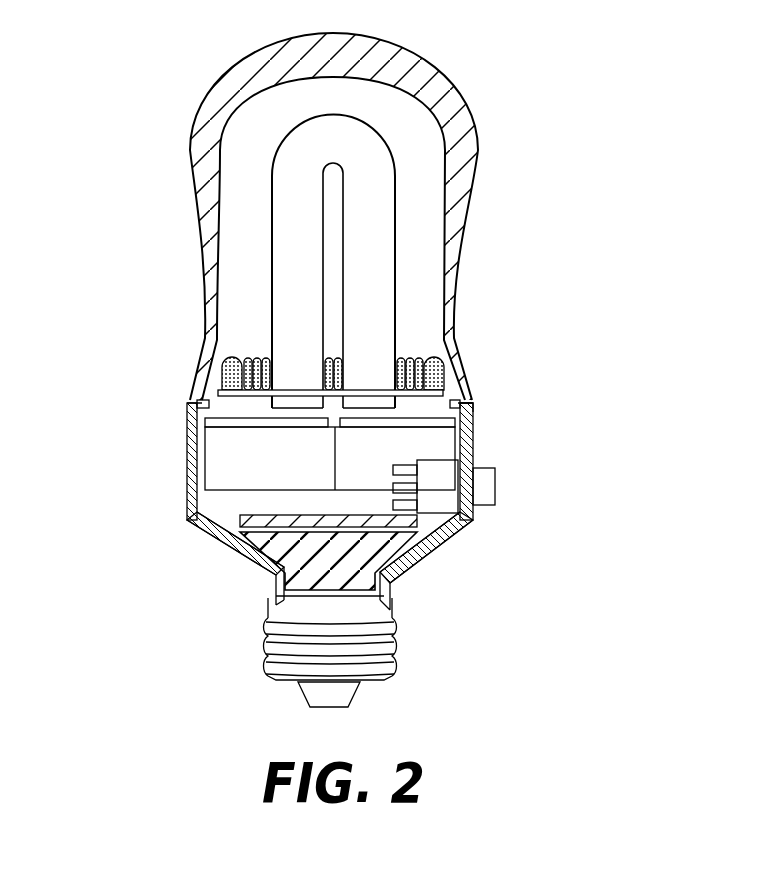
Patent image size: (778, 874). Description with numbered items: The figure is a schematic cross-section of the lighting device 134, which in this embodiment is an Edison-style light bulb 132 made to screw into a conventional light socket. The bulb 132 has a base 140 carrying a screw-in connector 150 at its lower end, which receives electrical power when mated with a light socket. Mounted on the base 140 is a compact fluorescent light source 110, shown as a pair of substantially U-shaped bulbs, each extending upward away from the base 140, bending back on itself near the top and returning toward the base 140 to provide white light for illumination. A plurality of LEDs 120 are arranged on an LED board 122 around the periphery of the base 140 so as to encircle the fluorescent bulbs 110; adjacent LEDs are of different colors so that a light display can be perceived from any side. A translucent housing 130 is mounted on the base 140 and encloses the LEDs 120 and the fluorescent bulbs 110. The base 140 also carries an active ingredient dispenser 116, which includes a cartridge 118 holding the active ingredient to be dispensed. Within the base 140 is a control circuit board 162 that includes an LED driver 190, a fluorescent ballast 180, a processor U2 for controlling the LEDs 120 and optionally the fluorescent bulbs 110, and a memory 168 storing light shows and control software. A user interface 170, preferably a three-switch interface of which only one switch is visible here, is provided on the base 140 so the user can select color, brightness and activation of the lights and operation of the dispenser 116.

The compact fluorescent light source 110 is at (377, 226).
The active ingredient dispenser 116 is at (293, 605).
The cartridge 118 is at (208, 540).
The LEDs 120 is at (258, 350).
The LED board 122 is at (207, 370).
The translucent housing 130 is at (450, 80).
The light bulb 132 is at (172, 129).
The lighting device 134 is at (473, 298).
The base 140 is at (186, 481).
The screw-in connector 150 is at (392, 645).
The control circuit board 162 is at (192, 527).
The memory 168 is at (467, 405).
The user interface 170 is at (483, 485).
The fluorescent ballast 180 is at (437, 452).
The LED driver 190 is at (235, 455).
The processor U2 is at (222, 421).